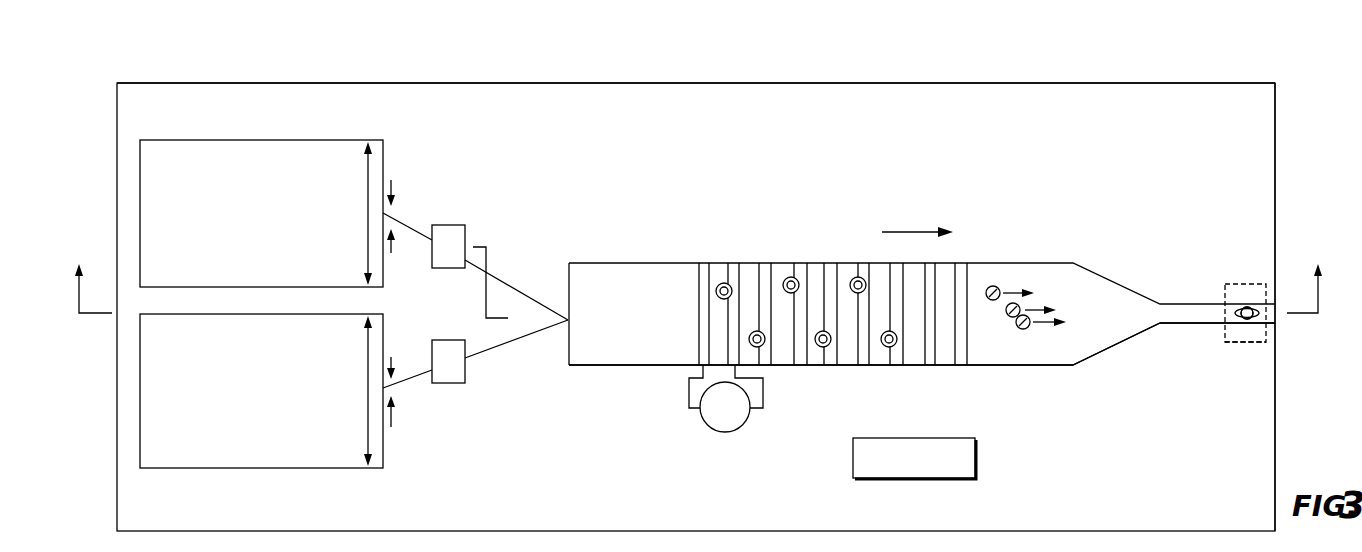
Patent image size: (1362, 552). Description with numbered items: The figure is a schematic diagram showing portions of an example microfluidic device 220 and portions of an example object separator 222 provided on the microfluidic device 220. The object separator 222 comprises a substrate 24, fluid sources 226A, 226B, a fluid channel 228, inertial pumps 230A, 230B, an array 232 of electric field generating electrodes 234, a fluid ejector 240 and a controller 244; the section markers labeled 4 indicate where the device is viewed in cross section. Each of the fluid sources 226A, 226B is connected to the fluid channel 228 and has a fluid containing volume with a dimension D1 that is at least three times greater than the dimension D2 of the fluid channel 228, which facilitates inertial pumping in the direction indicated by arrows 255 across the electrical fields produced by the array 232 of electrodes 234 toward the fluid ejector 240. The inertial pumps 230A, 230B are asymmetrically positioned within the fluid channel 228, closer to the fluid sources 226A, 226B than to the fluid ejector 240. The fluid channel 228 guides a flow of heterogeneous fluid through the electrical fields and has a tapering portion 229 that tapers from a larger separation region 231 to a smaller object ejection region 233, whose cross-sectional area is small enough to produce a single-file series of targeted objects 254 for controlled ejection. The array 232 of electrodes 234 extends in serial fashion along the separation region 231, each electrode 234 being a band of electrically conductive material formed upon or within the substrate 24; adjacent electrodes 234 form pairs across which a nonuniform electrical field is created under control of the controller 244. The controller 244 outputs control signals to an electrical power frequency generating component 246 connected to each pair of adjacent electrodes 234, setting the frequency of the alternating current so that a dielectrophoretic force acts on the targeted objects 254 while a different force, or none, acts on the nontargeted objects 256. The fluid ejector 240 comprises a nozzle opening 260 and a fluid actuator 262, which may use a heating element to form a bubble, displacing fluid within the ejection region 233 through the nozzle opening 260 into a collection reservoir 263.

The microfluidic device 220 is at (237, 70).
The object separator 222 is at (1092, 77).
The substrate 24 is at (1183, 83).
The section line 4- 4 is at (698, 274).
The fluid source 226A is at (307, 140).
The fluid source 226B is at (303, 468).
The fluid source dimension D1 is at (356, 304).
The fluid channel dimension D2 is at (404, 303).
The inertial pump 230A is at (447, 225).
The inertial pump 230B is at (447, 383).
The fluid channel 228 is at (590, 263).
The electric field generating electrodes 234 is at (704, 263).
The array of electrodes 232 is at (857, 241).
The targeted objects 254 is at (790, 277).
The arrows indicating pumping direction 255 is at (905, 232).
The nontargeted objects 256 is at (993, 285).
The separation region 231 is at (1005, 366).
The tapering portion 229 is at (1112, 348).
The object ejection region 233 is at (1190, 325).
The fluid ejector 240 is at (1244, 280).
The fluid actuator 262 is at (1233, 314).
The collection reservoir 263 is at (1230, 346).
The nozzle opening 260 is at (1247, 321).
The electrical power frequency generating component 246 is at (723, 432).
The controller 244 is at (976, 457).